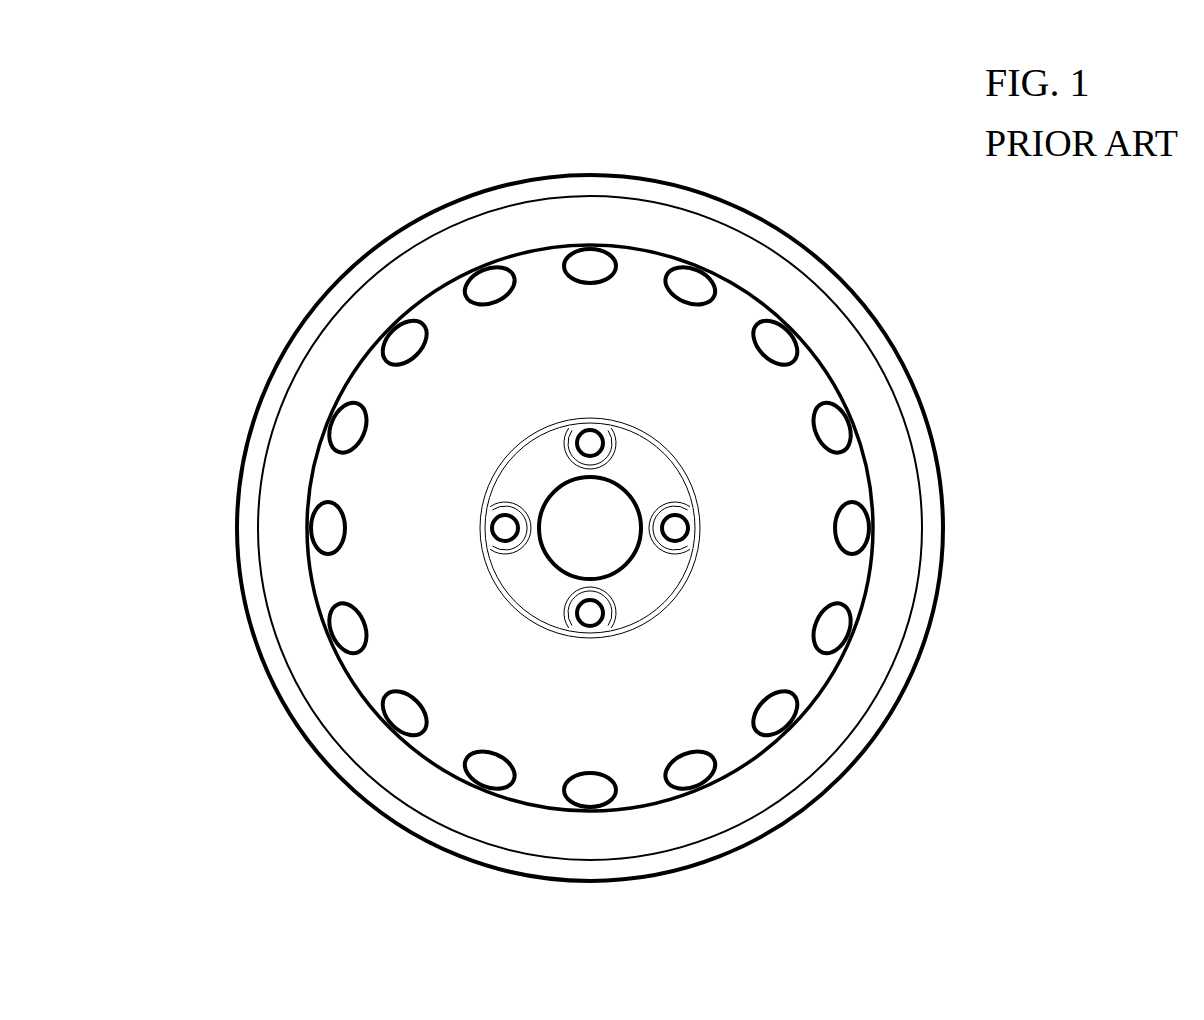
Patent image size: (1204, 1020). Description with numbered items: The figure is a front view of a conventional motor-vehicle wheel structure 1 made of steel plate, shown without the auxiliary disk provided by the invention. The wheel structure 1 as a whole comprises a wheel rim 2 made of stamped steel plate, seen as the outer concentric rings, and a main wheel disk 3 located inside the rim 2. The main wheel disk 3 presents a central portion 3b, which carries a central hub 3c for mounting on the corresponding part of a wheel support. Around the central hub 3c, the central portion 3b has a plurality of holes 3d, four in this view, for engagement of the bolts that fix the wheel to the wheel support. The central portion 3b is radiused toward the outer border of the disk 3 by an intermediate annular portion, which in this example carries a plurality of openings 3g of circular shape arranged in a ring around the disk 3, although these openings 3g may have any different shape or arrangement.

The motor-vehicle wheel structure 1 is at (965, 421).
The wheel rim 2 is at (418, 214).
The main wheel disk 3 is at (733, 316).
The central portion 3b is at (527, 481).
The central hub 3c is at (606, 480).
The holes 3d is at (598, 610).
The openings 3g is at (323, 546).